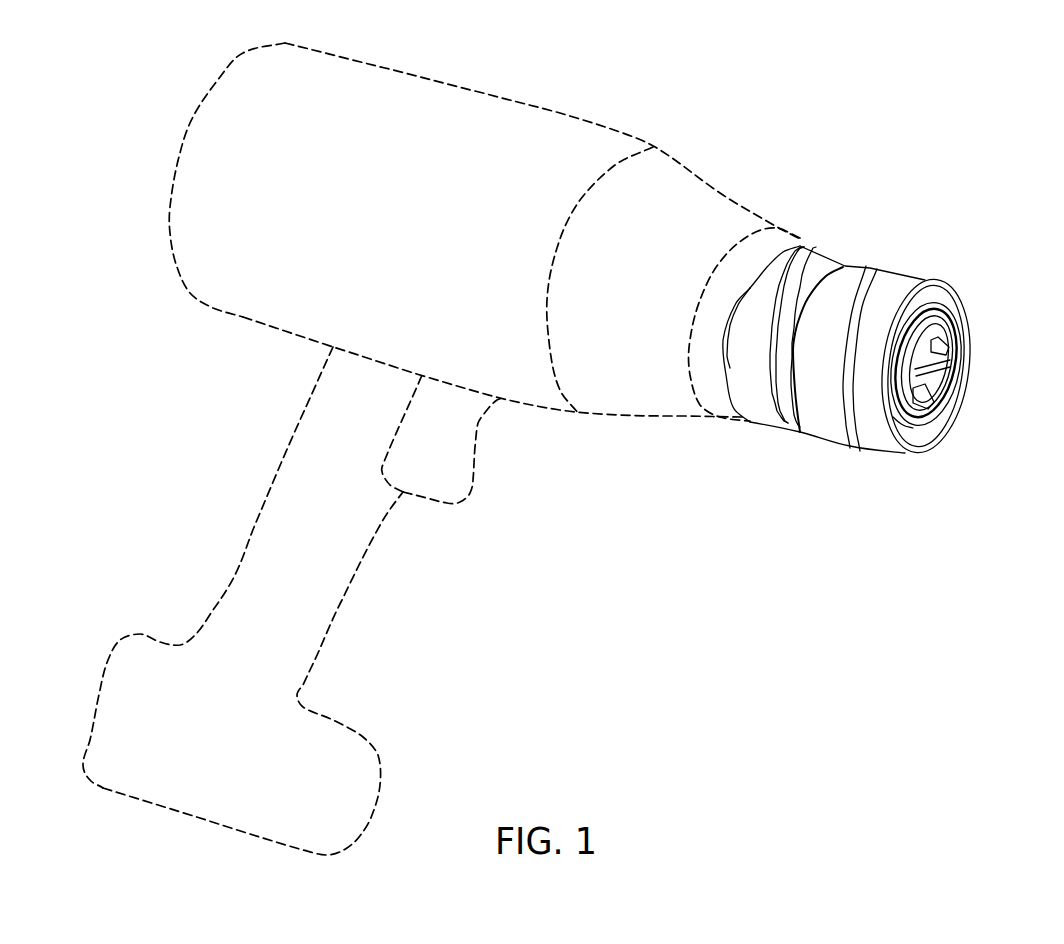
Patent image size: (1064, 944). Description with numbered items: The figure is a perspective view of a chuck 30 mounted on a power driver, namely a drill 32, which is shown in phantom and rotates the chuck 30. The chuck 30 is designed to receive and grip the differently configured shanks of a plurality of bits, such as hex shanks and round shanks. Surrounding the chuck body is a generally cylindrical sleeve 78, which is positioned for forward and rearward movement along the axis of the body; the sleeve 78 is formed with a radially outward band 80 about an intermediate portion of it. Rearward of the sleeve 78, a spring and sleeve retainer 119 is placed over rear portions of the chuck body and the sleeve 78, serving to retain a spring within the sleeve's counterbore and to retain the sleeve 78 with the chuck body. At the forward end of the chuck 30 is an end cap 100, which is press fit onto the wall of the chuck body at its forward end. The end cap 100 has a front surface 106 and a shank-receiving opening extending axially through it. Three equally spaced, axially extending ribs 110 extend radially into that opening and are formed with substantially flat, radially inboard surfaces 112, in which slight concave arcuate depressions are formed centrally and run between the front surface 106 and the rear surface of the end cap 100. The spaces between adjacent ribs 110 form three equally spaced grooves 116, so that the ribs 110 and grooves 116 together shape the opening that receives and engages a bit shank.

The drill 32 is at (484, 92).
The chuck 30 is at (913, 195).
The spring and sleeve retainer 119 is at (808, 252).
The radially outward band 80 is at (867, 266).
The sleeve 78 is at (908, 272).
The end cap 100 is at (943, 307).
The front surface 106 is at (945, 337).
The ribs 110 is at (940, 350).
The radially inboard surfaces 112 is at (940, 362).
The grooves 116 is at (927, 413).